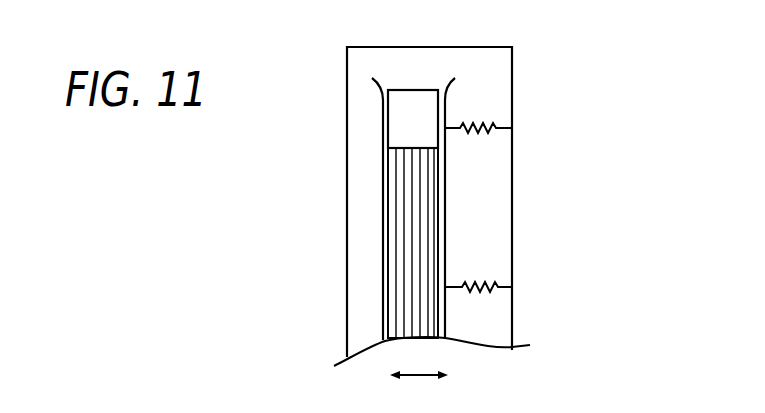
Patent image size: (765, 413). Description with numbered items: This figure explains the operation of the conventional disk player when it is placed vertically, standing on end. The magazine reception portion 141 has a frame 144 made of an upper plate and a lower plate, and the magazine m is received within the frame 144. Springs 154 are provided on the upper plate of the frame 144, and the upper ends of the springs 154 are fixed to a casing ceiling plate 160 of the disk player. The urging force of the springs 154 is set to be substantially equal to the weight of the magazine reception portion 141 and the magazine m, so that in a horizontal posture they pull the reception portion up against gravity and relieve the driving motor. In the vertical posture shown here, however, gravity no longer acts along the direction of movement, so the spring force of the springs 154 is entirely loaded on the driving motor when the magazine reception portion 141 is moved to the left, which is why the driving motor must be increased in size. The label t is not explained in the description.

The casing ceiling plate 160 is at (512, 187).
The magazine reception portion 141 is at (370, 202).
The magazine m is at (416, 104).
The frame 144 is at (388, 143).
The thickness t is at (408, 230).
The springs 154 is at (480, 116).